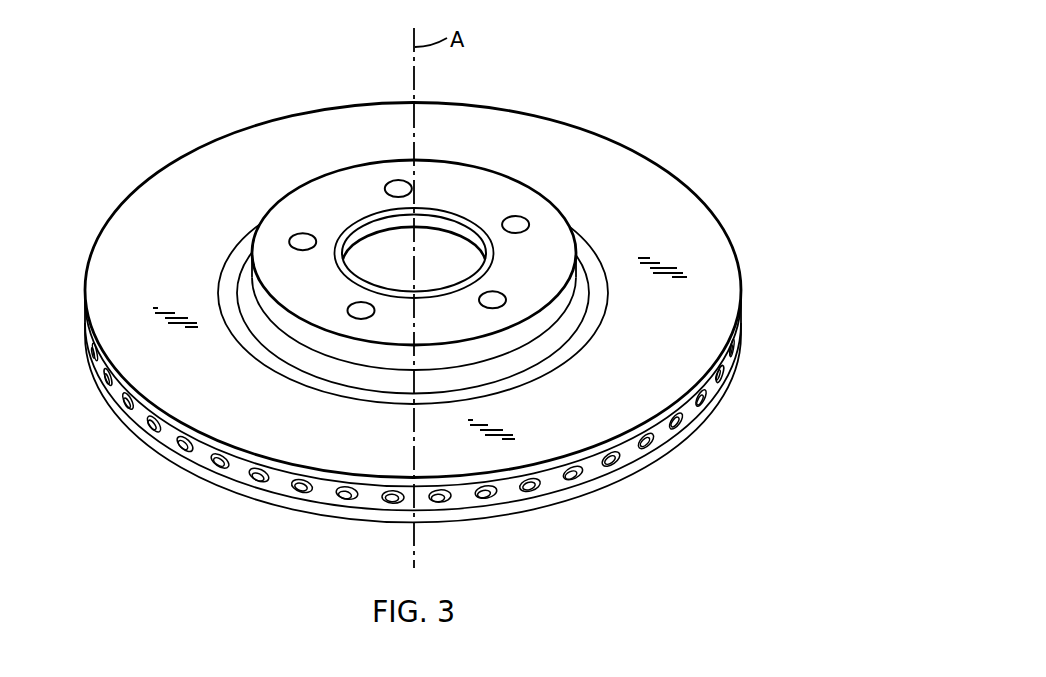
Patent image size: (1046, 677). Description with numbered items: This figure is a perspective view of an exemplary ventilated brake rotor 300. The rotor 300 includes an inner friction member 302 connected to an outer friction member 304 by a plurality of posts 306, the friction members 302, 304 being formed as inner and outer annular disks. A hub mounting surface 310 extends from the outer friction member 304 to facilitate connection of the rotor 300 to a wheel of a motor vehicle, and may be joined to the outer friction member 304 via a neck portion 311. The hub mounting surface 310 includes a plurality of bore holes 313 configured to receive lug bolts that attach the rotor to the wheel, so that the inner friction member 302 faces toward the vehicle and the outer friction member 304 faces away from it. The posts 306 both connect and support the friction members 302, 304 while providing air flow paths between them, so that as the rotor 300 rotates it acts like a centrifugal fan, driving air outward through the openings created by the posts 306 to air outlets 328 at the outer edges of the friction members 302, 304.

The ventilated brake rotor 300 is at (640, 60).
The inner friction member 302 is at (688, 432).
The outer friction member 304 is at (739, 292).
The posts 306 is at (640, 450).
The hub mounting surface 310 is at (516, 192).
The neck portion 311 is at (262, 294).
The bore holes 313 is at (388, 183).
The air outlets 328 is at (550, 487).